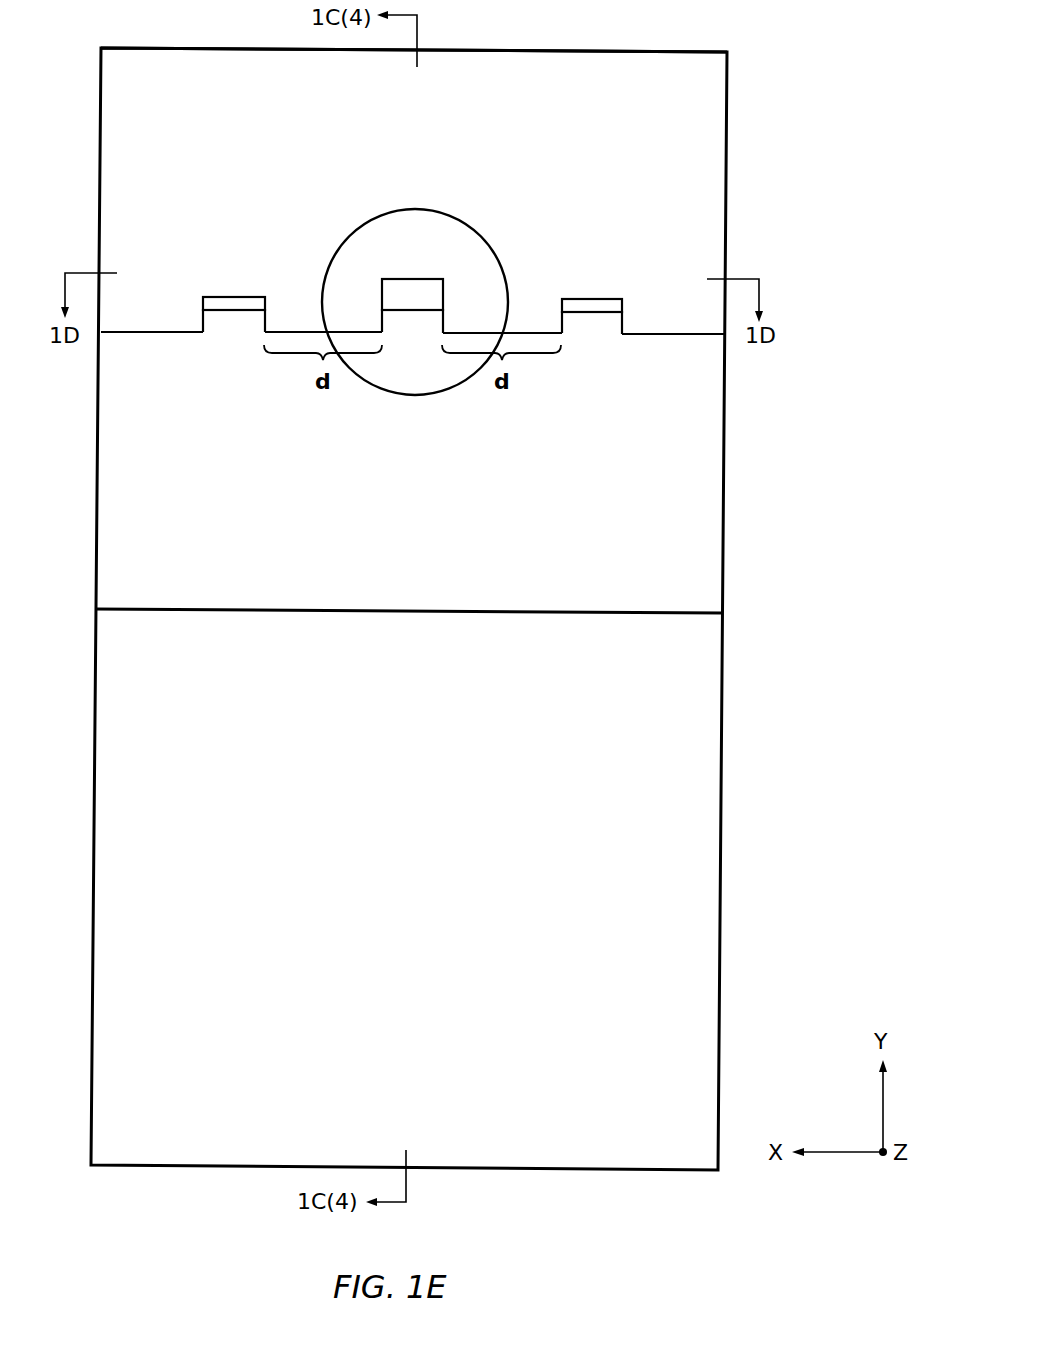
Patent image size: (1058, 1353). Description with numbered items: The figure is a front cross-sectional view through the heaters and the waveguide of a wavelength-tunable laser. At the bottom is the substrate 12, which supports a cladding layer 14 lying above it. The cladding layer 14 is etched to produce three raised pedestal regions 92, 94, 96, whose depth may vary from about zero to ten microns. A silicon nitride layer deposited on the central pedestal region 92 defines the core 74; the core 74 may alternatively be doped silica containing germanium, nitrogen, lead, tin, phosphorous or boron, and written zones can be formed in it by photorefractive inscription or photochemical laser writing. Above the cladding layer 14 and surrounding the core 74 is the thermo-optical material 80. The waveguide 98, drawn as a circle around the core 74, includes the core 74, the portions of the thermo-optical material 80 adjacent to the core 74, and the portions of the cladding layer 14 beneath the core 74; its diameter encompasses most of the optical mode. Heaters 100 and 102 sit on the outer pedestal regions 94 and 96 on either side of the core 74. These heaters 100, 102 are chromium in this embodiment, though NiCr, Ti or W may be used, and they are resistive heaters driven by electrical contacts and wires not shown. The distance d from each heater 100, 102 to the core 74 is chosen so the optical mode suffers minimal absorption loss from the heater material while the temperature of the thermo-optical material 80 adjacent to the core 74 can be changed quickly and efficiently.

The substrate 12 is at (424, 841).
The cladding layer 14 is at (426, 496).
The thermo-optical material 80 is at (428, 150).
The core 74 is at (420, 292).
The pedestal region 92 is at (400, 322).
The pedestal region 94 is at (237, 347).
The pedestal region 96 is at (587, 325).
The waveguide 98 is at (488, 243).
The heater 100 is at (243, 304).
The heater 102 is at (585, 303).